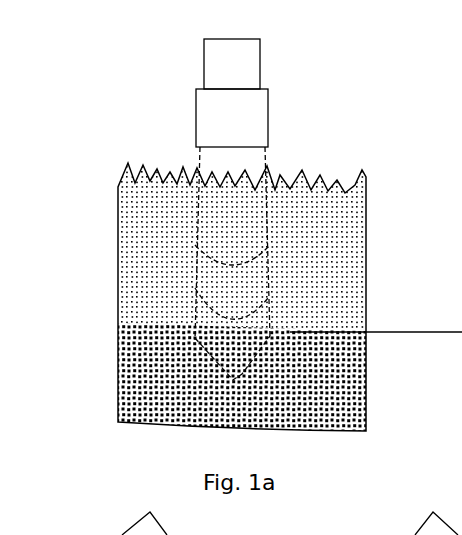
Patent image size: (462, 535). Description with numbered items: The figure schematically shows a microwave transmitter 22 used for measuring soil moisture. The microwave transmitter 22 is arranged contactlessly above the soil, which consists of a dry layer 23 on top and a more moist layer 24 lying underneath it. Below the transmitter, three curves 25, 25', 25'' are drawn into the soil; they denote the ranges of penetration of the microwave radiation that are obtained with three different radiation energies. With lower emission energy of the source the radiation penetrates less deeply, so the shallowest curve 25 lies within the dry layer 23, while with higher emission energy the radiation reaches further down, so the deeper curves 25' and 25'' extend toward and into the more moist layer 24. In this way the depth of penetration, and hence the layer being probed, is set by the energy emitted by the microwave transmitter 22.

The microwave transmitter 22 is at (260, 110).
The dry layer 23 is at (133, 227).
The more moist layer 24 is at (130, 348).
The curve 25 is at (300, 194).
The curve 25' is at (314, 246).
The curve 25'' is at (316, 391).